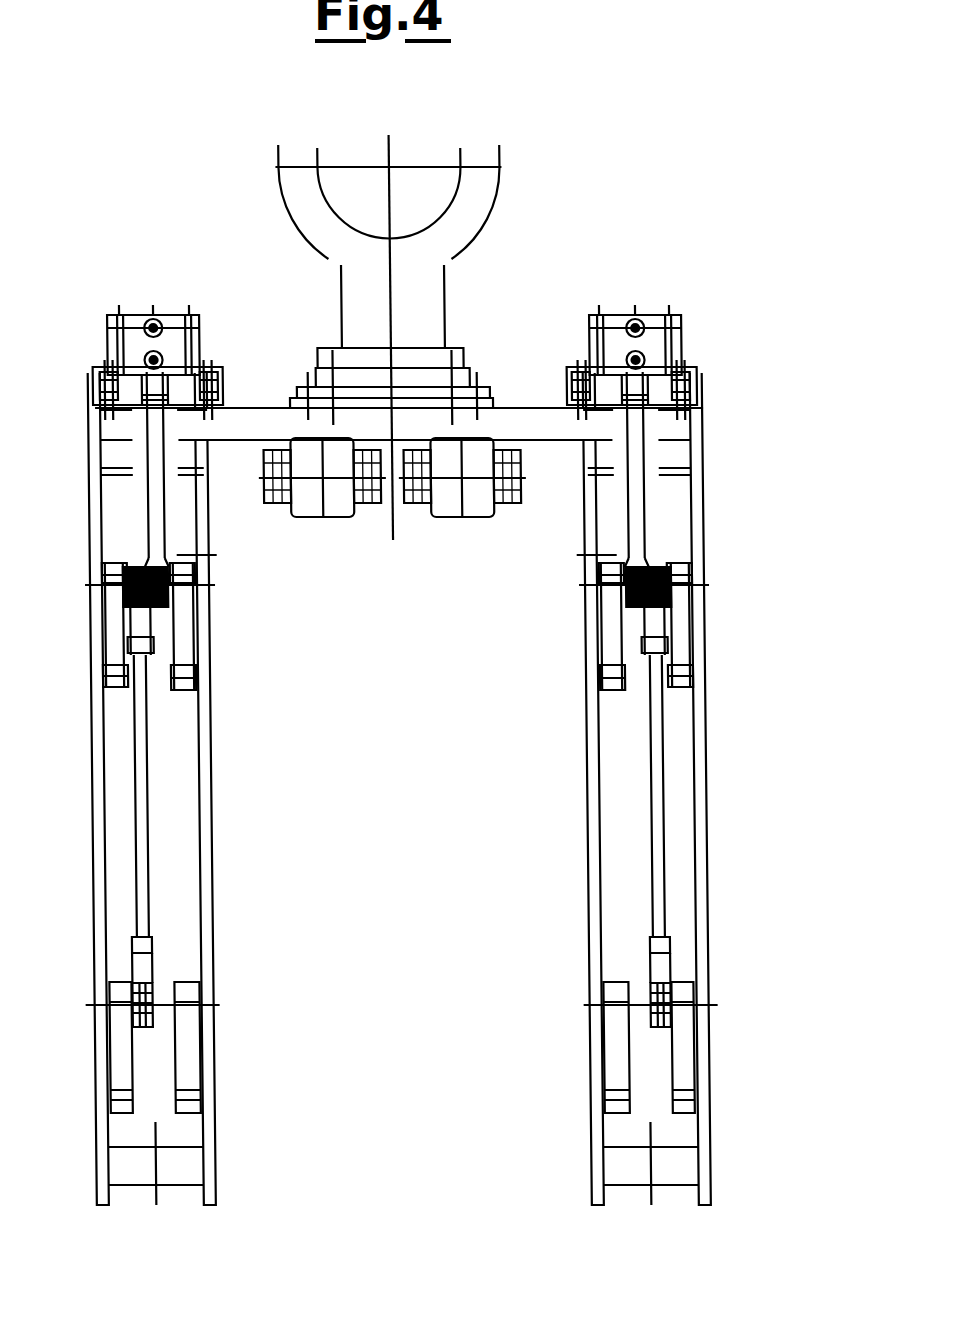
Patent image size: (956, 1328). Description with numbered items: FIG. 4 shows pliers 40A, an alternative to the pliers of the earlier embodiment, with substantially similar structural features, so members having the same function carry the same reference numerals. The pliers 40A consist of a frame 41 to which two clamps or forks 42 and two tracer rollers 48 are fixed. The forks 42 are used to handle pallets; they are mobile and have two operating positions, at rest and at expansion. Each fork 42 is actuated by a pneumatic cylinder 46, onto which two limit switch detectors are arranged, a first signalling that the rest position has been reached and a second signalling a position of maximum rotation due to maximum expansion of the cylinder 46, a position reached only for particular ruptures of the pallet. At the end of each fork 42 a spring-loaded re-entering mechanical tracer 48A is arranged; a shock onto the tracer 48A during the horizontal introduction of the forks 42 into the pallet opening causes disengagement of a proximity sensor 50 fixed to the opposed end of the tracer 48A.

The pliers 40A is at (475, 343).
The frame 41 is at (498, 400).
The clamp or fork 42 is at (198, 848).
The pneumatic cylinder 46 is at (361, 404).
The tracer roller 48 is at (340, 513).
The re-entering mechanical tracer 48A is at (173, 1173).
The proximity sensor 50 is at (646, 376).